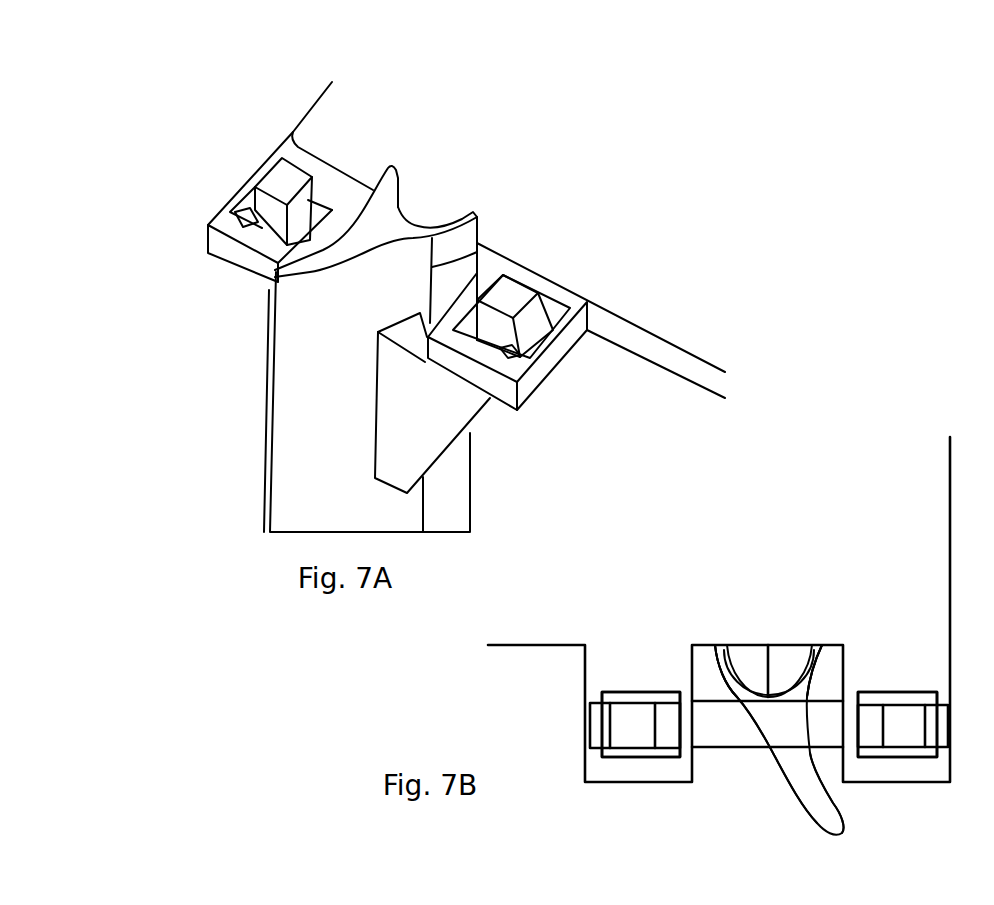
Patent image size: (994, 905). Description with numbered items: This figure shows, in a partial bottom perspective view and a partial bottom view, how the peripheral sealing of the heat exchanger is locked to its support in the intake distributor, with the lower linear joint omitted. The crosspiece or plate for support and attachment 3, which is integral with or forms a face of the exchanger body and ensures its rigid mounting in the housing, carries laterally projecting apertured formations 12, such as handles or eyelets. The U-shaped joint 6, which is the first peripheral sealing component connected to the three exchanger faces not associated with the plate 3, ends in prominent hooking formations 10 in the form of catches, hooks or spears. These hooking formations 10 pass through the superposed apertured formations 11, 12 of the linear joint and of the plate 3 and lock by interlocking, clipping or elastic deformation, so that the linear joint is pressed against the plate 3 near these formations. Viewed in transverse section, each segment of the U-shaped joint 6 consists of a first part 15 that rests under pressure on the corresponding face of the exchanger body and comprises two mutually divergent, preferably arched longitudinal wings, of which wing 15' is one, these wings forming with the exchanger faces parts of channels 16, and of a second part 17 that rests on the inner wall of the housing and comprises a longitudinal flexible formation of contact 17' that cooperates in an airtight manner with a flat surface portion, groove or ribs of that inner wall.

In FIG. 7B, the crosspiece or plate for support and attachment 3 is at (935, 608).
In FIG. 7A, the U-shaped joint 6 is at (262, 482).
In FIG. 7B, the U-shaped joint 6 is at (785, 760).
In FIG. 7A, the prominent hooking formations 10 is at (273, 178).
In FIG. 7B, the prominent hooking formations 10 is at (603, 737).
In FIG. 7A, the apertured formations 11 is at (273, 247).
In FIG. 7B, the apertured formations 11 is at (653, 758).
In FIG. 7A, the apertured formations 12 is at (522, 393).
In FIG. 7B, the apertured formations 12 is at (654, 762).
In FIG. 7B, the first part 15 is at (769, 587).
In FIG. 7B, the longitudinal wing 15' is at (813, 619).
In FIG. 7B, the channels 16 is at (755, 657).
In FIG. 7B, the second part 17 is at (756, 760).
In FIG. 7B, the longitudinal flexible formation of contact 17' is at (862, 793).